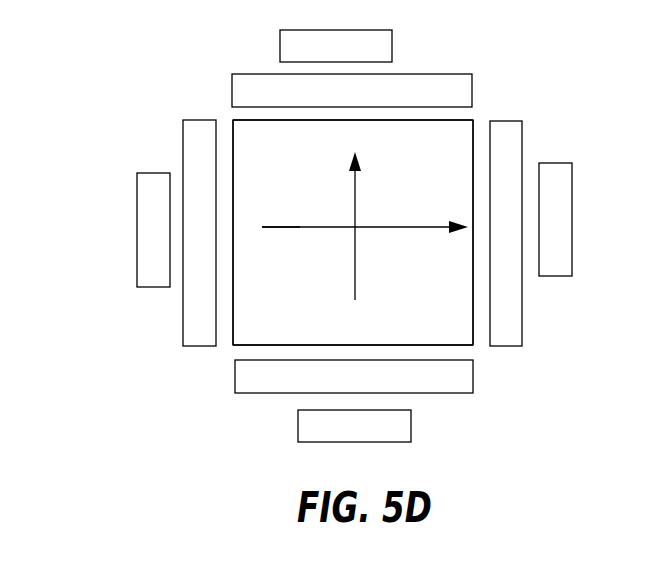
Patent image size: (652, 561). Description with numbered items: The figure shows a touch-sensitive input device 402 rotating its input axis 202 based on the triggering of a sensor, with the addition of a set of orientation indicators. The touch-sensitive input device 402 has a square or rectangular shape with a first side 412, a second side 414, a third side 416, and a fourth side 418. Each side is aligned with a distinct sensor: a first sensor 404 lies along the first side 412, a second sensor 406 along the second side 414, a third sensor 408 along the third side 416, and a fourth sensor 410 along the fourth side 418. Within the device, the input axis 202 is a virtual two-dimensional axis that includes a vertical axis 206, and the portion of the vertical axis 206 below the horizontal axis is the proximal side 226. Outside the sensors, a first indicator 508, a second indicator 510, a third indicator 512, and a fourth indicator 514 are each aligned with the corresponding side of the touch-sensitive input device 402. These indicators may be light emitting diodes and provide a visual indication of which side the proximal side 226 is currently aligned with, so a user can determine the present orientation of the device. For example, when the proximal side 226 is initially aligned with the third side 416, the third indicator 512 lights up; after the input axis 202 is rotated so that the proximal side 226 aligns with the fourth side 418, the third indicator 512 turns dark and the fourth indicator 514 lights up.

The input axis 202 is at (317, 166).
The vertical axis 206 is at (338, 228).
The proximal side 226 is at (286, 216).
The touch-sensitive input device 402 is at (369, 334).
The first sensor 404 is at (442, 74).
The second sensor 406 is at (522, 328).
The third sensor 408 is at (428, 393).
The fourth sensor 410 is at (183, 322).
The first side 412 is at (440, 120).
The second side 414 is at (473, 180).
The third side 416 is at (395, 345).
The fourth side 418 is at (233, 299).
The first indicator 508 is at (392, 40).
The second indicator 510 is at (554, 163).
The third indicator 512 is at (298, 421).
The fourth indicator 514 is at (137, 217).